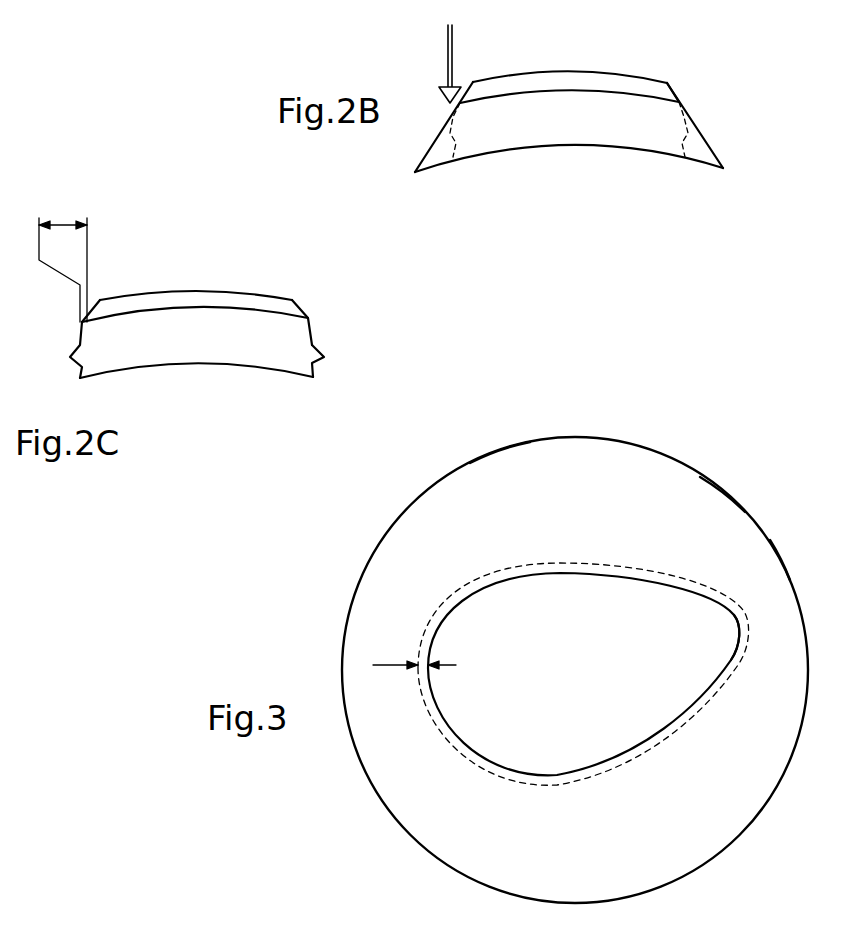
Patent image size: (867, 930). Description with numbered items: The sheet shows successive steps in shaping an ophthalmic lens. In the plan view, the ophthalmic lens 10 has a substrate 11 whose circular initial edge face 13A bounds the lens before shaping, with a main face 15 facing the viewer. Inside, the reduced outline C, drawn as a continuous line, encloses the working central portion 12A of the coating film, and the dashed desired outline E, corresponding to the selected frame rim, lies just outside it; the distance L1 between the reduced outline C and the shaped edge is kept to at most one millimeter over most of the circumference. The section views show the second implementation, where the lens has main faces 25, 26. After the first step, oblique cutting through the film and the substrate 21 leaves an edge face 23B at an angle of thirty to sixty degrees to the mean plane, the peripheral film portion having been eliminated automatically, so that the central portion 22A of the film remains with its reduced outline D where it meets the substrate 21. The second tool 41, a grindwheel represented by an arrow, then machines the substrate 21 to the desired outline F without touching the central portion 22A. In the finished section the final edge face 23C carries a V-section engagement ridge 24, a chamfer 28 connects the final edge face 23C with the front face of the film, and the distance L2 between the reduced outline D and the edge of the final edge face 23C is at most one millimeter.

In FIG. 3, the ophthalmic lens 10 is at (357, 804).
In FIG. 3, the substrate 11 is at (703, 497).
In FIG. 3, the working central portion of the coating film 12A is at (619, 752).
In FIG. 3, the initial edge face 13A is at (776, 548).
In FIG. 3, the main face 15 is at (515, 457).
In FIG. 2B, the substrate 21 is at (480, 143).
In FIG. 2B, the central portion of the coating film 22A is at (594, 82).
In FIG. 2B, the edge face 23B is at (715, 152).
In FIG. 2C, the final edge face 23C is at (314, 370).
In FIG. 2C, the engagement ridge 24 is at (72, 370).
In FIG. 2B, the main face 25 is at (632, 93).
In FIG. 2C, the main face 25 is at (148, 313).
In FIG. 2B, the main face 26 is at (650, 155).
In FIG. 2C, the main face 26 is at (175, 367).
In FIG. 2C, the chamfer 28 is at (80, 322).
In FIG. 2B, the second tool 41 is at (447, 58).
In FIG. 3, the reduced outline C is at (738, 653).
In FIG. 2B, the reduced outline D is at (680, 91).
In FIG. 2C, the reduced outline D is at (308, 318).
In FIG. 3, the desired outline E is at (650, 582).
In FIG. 2C, the desired outline F is at (313, 337).
In FIG. 3, the distance L1 is at (414, 651).
In FIG. 2C, the distance L2 is at (68, 224).